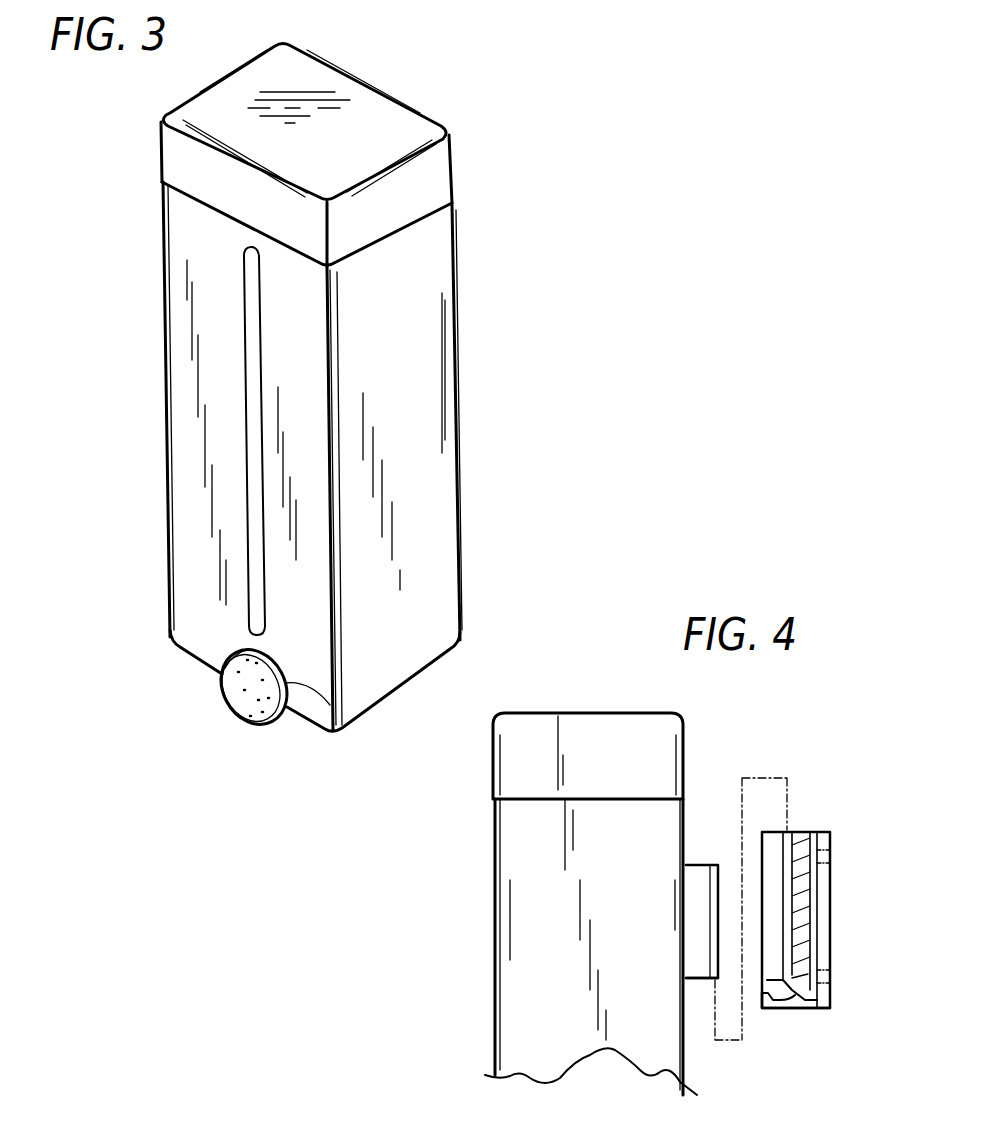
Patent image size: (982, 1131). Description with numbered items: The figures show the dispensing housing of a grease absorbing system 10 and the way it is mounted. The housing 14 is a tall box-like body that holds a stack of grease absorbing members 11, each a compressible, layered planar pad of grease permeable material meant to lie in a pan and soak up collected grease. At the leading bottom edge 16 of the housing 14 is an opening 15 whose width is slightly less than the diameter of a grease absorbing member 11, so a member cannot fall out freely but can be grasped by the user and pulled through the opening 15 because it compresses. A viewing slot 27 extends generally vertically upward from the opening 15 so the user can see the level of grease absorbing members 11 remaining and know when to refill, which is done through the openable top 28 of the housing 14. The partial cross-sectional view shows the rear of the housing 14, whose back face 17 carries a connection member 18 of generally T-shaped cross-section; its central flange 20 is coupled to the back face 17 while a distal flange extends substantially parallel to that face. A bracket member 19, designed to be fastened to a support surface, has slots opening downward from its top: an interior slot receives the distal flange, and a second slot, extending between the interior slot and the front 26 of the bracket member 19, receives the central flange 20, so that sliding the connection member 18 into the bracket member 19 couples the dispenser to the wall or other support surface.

In FIG. 3, the grease absorbing system 10 is at (478, 90).
In FIG. 3, the housing 14 is at (452, 132).
In FIG. 4, the housing 14 is at (495, 720).
In FIG. 3, the openable top 28 is at (440, 182).
In FIG. 3, the viewing slot 27 is at (247, 370).
In FIG. 3, the leading bottom edge 16 is at (190, 660).
In FIG. 3, the grease absorbing member 11 is at (223, 710).
In FIG. 3, the opening 15 is at (285, 683).
In FIG. 4, the back face 17 is at (697, 860).
In FIG. 4, the connection member 18 is at (718, 980).
In FIG. 4, the bracket member 19 is at (830, 830).
In FIG. 4, the central flange 20 is at (687, 803).
In FIG. 4, the front 26 is at (762, 1003).